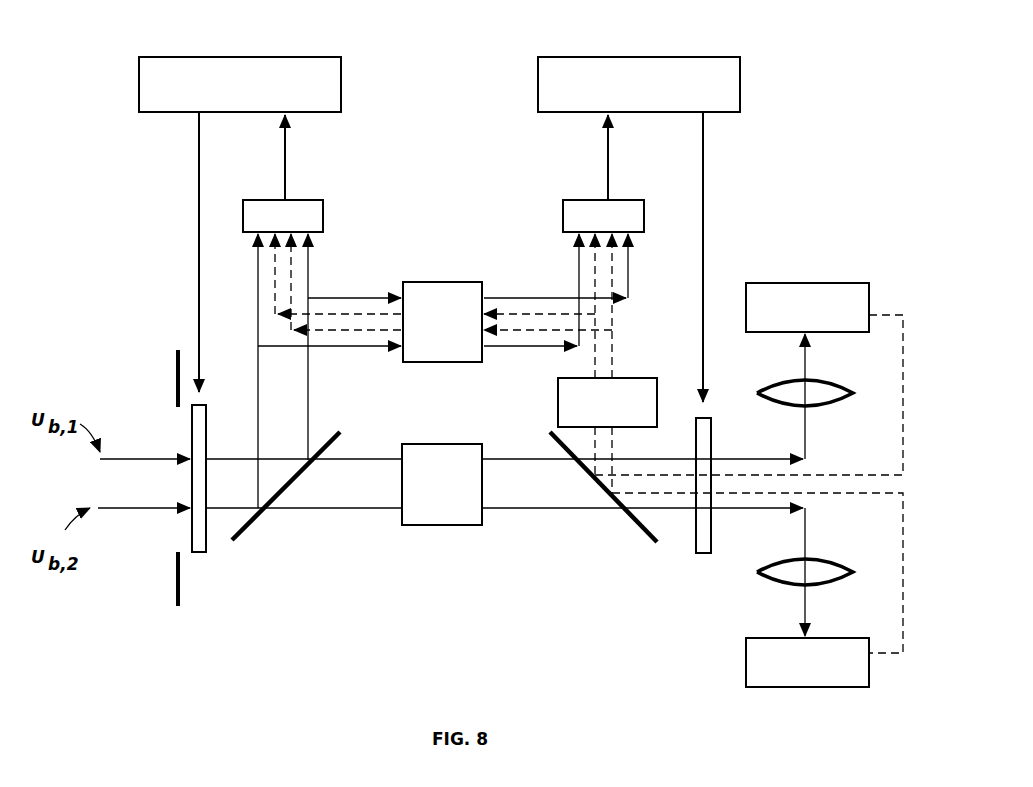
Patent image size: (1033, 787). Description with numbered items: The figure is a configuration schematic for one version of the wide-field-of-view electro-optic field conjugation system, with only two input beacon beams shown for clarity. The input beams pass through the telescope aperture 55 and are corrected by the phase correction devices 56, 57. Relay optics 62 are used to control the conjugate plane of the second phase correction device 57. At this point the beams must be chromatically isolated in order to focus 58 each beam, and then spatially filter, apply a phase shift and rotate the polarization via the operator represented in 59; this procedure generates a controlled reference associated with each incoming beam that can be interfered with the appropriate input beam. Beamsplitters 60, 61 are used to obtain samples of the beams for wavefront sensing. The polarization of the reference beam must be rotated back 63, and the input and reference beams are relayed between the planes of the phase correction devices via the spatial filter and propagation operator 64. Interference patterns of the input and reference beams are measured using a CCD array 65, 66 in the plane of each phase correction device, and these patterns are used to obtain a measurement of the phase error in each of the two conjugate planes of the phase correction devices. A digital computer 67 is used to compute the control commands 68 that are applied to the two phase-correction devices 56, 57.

The telescope aperture 55 is at (167, 600).
The phase correction device 56 is at (212, 553).
The phase correction device 57 is at (690, 553).
The focus 58 is at (752, 395).
The operator 59 is at (826, 267).
The beamsplitter 60 is at (251, 526).
The beamsplitter 61 is at (634, 530).
The relay optics 62 is at (395, 523).
The polarization rotation back 63 is at (556, 391).
The spatial filter and propagation operator 64 is at (440, 278).
The CCD array 65 is at (325, 197).
The CCD array 66 is at (570, 197).
The digital computer 67 is at (288, 50).
The control commands 68 is at (196, 199).